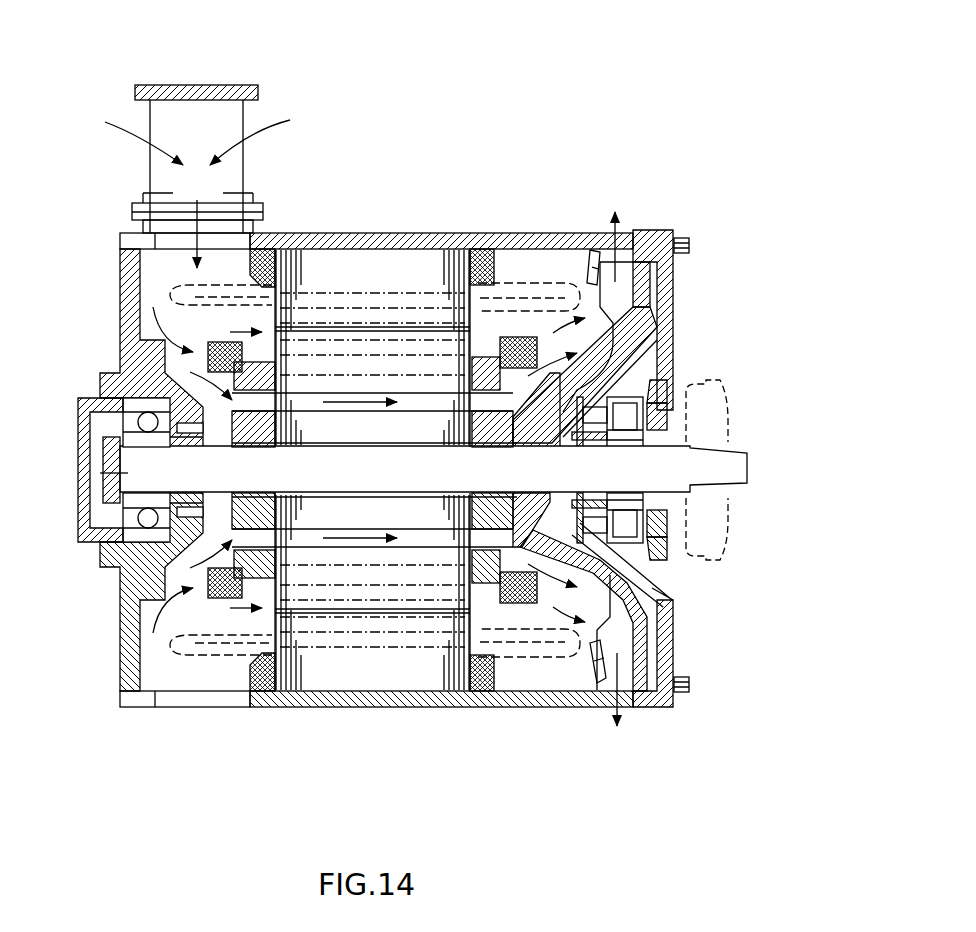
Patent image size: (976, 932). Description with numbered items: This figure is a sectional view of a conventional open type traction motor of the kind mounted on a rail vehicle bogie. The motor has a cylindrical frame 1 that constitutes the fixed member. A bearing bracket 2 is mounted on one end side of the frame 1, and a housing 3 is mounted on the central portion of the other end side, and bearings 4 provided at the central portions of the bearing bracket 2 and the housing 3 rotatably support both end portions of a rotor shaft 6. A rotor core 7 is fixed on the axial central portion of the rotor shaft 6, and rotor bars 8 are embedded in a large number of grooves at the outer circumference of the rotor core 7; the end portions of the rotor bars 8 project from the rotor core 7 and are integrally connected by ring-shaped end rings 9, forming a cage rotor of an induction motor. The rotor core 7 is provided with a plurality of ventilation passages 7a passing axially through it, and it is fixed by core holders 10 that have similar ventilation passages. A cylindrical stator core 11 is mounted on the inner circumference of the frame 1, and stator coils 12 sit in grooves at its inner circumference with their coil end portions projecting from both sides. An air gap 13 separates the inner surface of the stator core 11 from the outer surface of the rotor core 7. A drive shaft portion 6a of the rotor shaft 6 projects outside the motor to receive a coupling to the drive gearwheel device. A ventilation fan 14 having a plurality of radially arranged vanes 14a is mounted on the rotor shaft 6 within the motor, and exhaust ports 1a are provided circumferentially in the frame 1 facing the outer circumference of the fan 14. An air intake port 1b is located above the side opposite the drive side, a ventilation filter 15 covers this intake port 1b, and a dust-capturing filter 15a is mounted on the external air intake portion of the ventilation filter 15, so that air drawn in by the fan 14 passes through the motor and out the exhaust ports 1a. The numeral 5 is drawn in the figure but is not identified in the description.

The frame 1 is at (548, 692).
The exhaust ports 1a is at (628, 230).
The air intake port 1b is at (223, 220).
The bearing bracket 2 is at (660, 625).
The housing 3 is at (120, 627).
The bearings 4 is at (650, 560).
The bearing 5 is at (118, 548).
The rotor shaft 6 is at (98, 470).
The drive shaft portion 6a is at (707, 380).
The rotor core 7 is at (378, 335).
The ventilation passages 7a is at (415, 385).
The rotor bars 8 is at (323, 307).
The end rings 9 is at (200, 360).
The core holders 10 is at (187, 290).
The stator core 11 is at (412, 675).
The stator coils 12 is at (552, 300).
The air gap 13 is at (347, 335).
The ventilation fan 14 is at (660, 604).
The vanes 14a is at (655, 637).
The ventilation filter 15 is at (167, 83).
The filter 15a is at (210, 113).